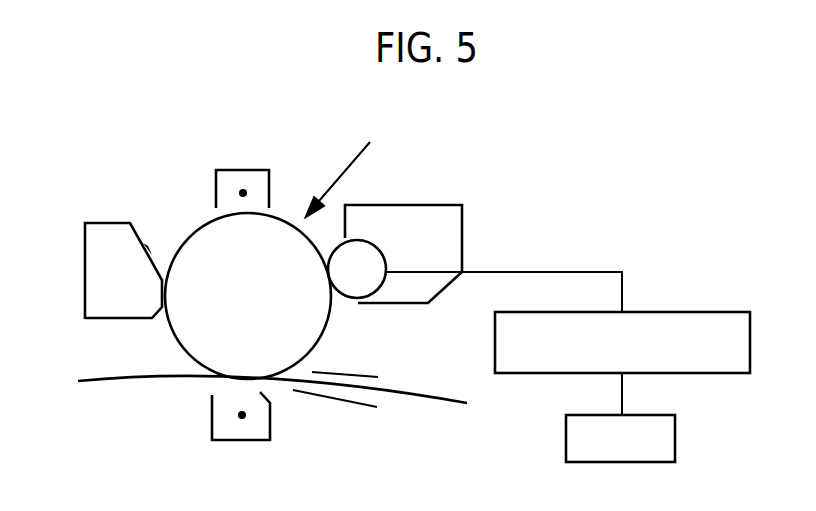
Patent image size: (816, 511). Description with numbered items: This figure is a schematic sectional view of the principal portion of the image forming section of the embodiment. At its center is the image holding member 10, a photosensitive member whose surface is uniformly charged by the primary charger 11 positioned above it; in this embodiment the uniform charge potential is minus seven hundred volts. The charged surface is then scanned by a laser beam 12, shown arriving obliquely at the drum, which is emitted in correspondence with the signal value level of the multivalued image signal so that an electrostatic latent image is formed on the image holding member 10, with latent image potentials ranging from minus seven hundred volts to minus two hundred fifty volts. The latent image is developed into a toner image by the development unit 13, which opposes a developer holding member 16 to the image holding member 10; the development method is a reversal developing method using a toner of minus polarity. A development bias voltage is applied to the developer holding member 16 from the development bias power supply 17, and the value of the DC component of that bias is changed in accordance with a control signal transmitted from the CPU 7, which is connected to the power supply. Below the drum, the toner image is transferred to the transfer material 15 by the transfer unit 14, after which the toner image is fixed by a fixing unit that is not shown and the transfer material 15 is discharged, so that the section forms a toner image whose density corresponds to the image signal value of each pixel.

The CPU 7 is at (650, 415).
The image holding member 10 is at (190, 233).
The primary charger 11 is at (250, 170).
The laser beam 12 is at (344, 172).
The development unit 13 is at (405, 204).
The transfer unit 14 is at (212, 410).
The transfer material 15 is at (150, 377).
The developer holding member 16 is at (345, 306).
The development bias power supply 17 is at (680, 312).